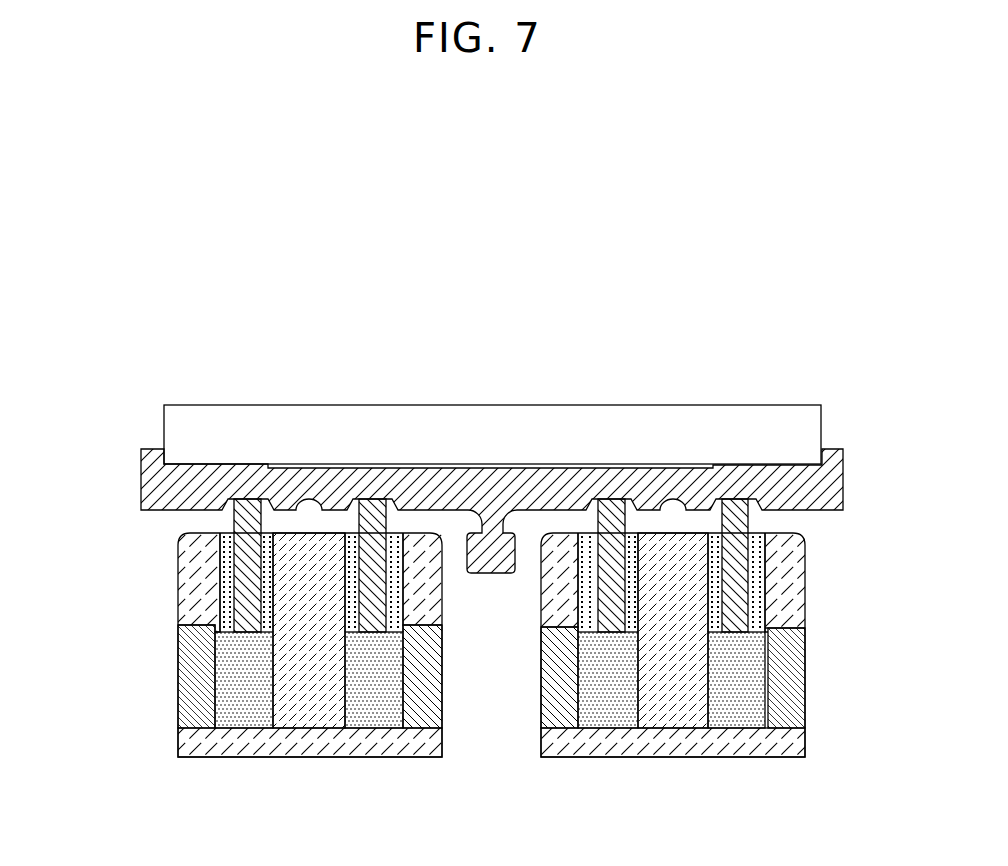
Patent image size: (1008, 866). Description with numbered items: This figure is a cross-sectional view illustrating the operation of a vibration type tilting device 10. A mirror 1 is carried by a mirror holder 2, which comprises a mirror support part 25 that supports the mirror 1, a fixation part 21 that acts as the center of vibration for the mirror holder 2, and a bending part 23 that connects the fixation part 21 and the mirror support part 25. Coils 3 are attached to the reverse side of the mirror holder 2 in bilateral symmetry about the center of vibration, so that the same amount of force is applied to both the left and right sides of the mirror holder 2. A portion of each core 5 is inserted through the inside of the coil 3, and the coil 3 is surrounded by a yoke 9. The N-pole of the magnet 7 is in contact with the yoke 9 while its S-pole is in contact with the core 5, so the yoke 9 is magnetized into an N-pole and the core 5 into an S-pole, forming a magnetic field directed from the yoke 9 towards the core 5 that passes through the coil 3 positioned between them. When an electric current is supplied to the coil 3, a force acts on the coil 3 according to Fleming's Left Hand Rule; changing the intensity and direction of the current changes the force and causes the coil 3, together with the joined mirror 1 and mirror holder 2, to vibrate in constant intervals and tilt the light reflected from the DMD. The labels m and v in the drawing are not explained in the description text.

The substrate lifting apparatus 10 is at (774, 354).
The mirror 1 is at (275, 413).
The mirror holder 2 is at (843, 450).
The mirror support part 25 is at (153, 485).
The fixation part 21 is at (492, 568).
The bending part 23 is at (507, 522).
The yoke 9 is at (788, 572).
The magnet 7 is at (805, 640).
The core 5 is at (303, 700).
The coil 3 is at (368, 630).
The movable magnet body m is at (233, 710).
The vacuum chamber v is at (223, 593).